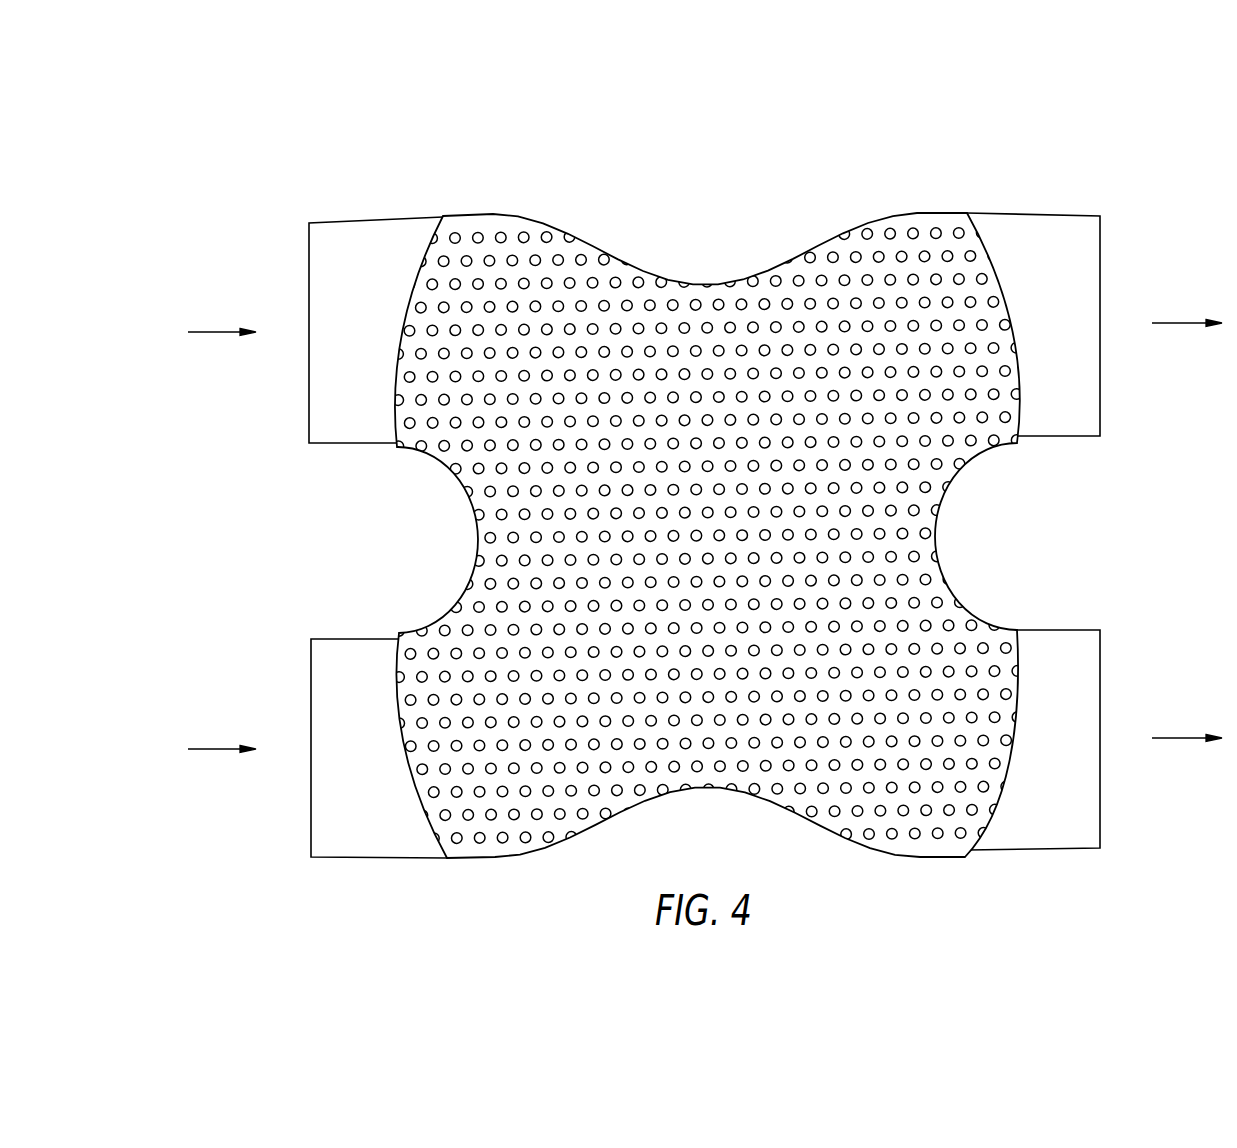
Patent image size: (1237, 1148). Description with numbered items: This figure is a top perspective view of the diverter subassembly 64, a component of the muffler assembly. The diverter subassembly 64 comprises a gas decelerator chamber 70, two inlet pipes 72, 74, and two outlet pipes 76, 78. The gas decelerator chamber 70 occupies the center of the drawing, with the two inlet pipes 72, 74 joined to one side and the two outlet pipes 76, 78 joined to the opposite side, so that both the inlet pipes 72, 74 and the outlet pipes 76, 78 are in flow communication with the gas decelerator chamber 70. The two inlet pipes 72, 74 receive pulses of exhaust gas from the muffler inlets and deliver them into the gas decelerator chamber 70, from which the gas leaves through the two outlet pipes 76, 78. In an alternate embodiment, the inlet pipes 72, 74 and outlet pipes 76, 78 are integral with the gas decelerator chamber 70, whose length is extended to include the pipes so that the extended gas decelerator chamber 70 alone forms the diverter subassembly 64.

The diverter subassembly 64 is at (713, 461).
The gas decelerator chamber 70 is at (706, 313).
The inlet pipe 72 is at (364, 240).
The inlet pipe 74 is at (366, 840).
The outlet pipe 76 is at (1049, 232).
The outlet pipe 78 is at (1051, 835).